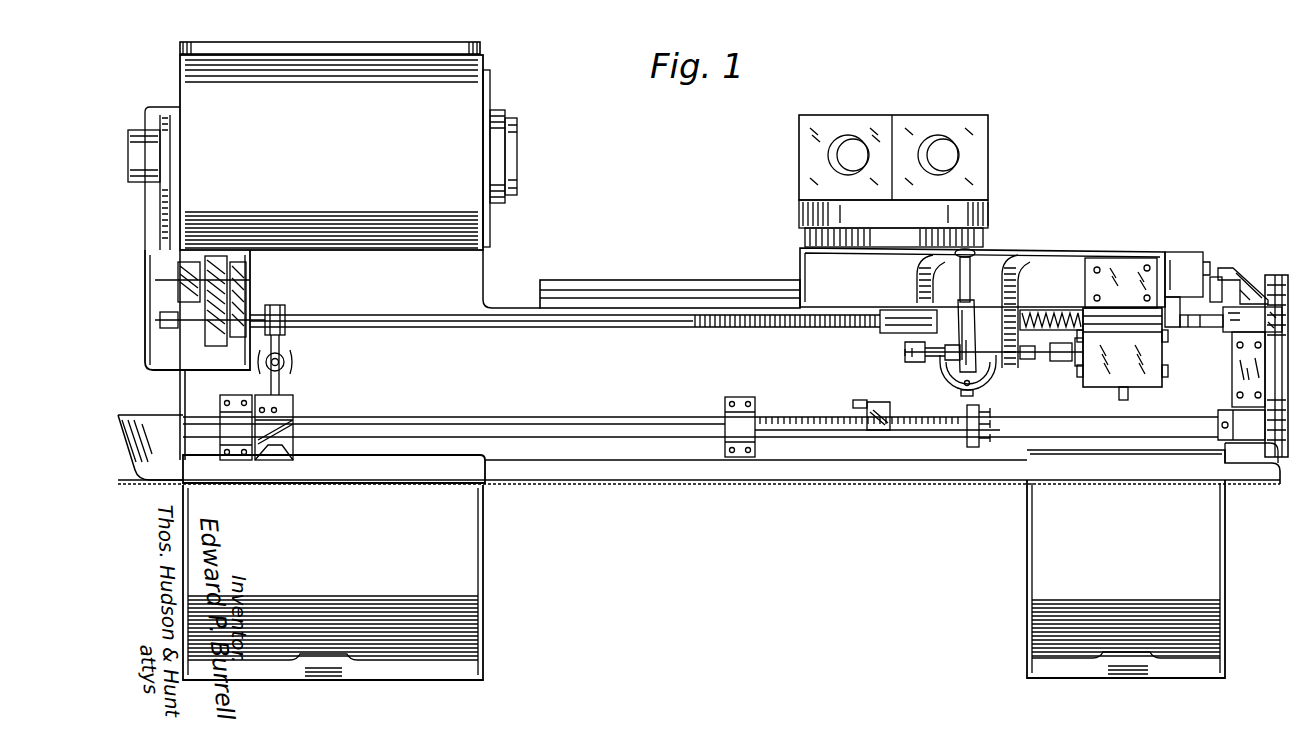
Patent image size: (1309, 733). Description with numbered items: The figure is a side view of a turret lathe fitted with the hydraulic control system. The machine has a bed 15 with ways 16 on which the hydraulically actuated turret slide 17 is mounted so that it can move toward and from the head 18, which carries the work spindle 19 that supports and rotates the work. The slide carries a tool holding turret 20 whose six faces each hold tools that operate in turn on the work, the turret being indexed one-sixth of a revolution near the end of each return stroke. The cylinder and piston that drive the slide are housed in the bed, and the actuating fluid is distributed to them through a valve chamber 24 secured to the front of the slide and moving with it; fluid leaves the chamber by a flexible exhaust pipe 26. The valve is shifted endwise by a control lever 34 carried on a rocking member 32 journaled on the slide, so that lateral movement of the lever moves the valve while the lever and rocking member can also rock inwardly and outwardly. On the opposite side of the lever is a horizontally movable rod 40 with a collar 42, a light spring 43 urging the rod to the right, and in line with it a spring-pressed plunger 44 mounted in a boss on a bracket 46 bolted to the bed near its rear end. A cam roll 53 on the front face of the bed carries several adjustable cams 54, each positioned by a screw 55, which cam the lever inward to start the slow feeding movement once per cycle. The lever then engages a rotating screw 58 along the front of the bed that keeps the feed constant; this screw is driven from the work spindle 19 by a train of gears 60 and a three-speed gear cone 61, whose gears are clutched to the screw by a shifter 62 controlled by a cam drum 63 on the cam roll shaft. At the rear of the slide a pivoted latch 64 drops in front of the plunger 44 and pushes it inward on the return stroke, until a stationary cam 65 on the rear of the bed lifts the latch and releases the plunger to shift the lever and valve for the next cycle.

The bed 15 is at (703, 465).
The ways 16 is at (645, 283).
The turret slide 17 is at (1060, 250).
The head 18 is at (335, 62).
The work spindle 19 is at (505, 112).
The tool holding turret 20 is at (965, 118).
The valve chamber 24 is at (1140, 378).
The exhaust pipe 26 is at (1118, 393).
The rocking member 32 is at (944, 374).
The control lever 34 is at (960, 272).
The rod 40 is at (976, 310).
The collar 42 is at (1078, 326).
The light spring 43 is at (1052, 312).
The plunger 44 is at (1206, 322).
The bracket 46 is at (1232, 360).
The cam roll 53 is at (640, 418).
The adjustable cam 54 is at (862, 403).
The adjusting screw 55 is at (980, 422).
The rotating screw 58 is at (757, 330).
The train of gears 60 is at (158, 212).
The gear cone 61 is at (225, 250).
The shifter 62 is at (285, 345).
The cam drum 63 is at (293, 408).
The pivoted latch 64 is at (1200, 288).
The stationary cam 65 is at (1236, 268).